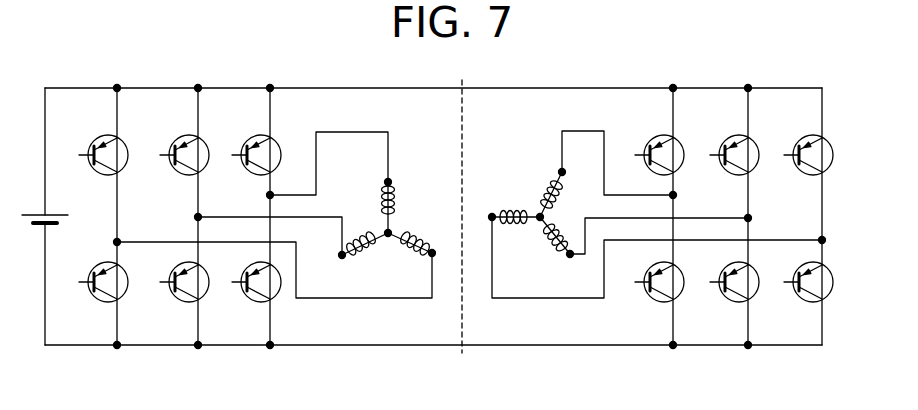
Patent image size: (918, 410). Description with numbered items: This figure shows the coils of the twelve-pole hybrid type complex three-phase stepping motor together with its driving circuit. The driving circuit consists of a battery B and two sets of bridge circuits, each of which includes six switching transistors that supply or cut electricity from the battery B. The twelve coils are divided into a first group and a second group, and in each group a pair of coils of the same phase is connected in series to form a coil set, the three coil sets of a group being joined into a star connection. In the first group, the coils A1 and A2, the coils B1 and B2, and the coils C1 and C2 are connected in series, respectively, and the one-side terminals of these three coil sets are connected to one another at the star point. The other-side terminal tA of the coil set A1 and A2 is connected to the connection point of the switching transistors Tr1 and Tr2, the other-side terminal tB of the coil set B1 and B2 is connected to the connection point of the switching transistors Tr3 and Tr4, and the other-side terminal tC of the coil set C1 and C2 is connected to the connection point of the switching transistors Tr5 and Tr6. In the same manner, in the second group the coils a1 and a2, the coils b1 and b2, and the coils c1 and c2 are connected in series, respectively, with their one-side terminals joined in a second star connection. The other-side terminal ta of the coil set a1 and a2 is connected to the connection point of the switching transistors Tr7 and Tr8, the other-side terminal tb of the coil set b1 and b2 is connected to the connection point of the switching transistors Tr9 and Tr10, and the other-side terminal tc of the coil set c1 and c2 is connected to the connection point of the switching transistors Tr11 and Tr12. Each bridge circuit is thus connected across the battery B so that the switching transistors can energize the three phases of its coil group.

The battery B is at (38, 216).
The switching transistor Tr1 is at (252, 144).
The switching transistor Tr2 is at (252, 292).
The switching transistor Tr3 is at (180, 144).
The switching transistor Tr4 is at (179, 292).
The switching transistor Tr5 is at (96, 144).
The switching transistor Tr6 is at (98, 292).
The switching transistor Tr7 is at (651, 142).
The switching transistor Tr8 is at (659, 292).
The switching transistor Tr9 is at (731, 142).
The switching transistor Tr10 is at (729, 292).
The switching transistor Tr11 is at (803, 142).
The switching transistor Tr12 is at (803, 292).
The other-side terminal tA is at (390, 181).
The other-side terminal tB is at (341, 257).
The other-side terminal tC is at (432, 256).
The coil A1 is at (357, 207).
The coil A2 is at (382, 212).
The coil B1 is at (372, 258).
The coil B2 is at (362, 247).
The coil C1 is at (419, 216).
The coil C2 is at (410, 236).
The other-side terminal ta is at (565, 175).
The other-side terminal tb is at (572, 257).
The other-side terminal tc is at (490, 219).
The coil a1 is at (522, 176).
The coil a2 is at (546, 195).
The coil b1 is at (539, 249).
The coil b2 is at (543, 240).
The coil c1 is at (504, 200).
The coil c2 is at (518, 212).